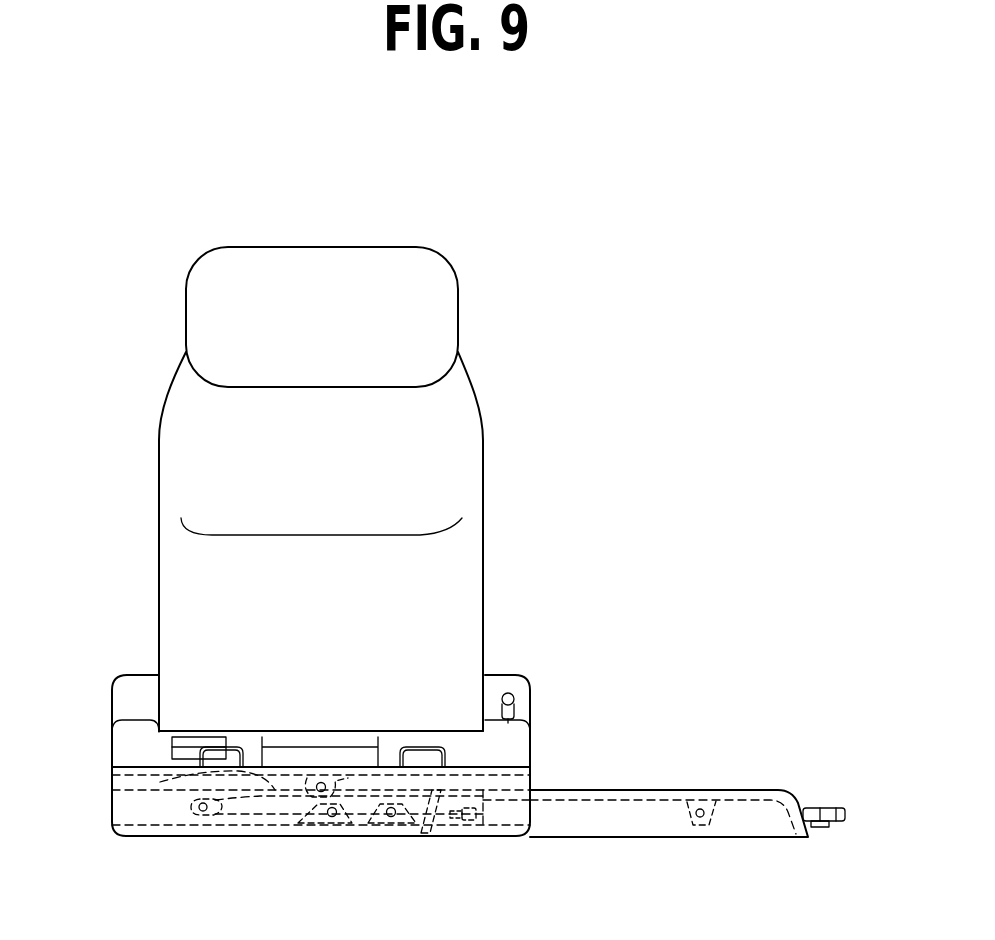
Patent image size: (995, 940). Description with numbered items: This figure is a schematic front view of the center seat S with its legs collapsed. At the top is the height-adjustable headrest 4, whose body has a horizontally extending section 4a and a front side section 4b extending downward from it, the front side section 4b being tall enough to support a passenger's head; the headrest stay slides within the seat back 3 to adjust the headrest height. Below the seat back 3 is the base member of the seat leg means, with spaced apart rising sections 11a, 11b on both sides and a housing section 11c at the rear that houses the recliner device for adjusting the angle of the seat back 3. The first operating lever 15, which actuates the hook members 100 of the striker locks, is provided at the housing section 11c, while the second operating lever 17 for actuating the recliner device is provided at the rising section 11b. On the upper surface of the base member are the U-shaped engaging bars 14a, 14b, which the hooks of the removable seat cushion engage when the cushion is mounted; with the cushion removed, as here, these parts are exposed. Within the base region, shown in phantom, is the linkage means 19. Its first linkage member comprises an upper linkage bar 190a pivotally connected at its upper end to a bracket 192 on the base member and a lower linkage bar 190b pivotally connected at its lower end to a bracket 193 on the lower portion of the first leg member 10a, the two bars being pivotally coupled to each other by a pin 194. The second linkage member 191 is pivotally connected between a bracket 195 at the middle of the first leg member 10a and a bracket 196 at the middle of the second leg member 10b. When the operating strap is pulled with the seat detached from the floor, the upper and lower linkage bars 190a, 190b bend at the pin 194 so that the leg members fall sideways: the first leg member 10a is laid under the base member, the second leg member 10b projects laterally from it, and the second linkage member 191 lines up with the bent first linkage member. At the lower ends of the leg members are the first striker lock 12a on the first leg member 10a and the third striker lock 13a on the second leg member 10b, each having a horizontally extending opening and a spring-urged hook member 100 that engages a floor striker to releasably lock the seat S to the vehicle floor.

The center seat S is at (508, 278).
The headrest 4 is at (226, 240).
The horizontally extending section 4a is at (322, 247).
The front side section 4b is at (393, 323).
The seat back 3 is at (456, 500).
The rising section 11a is at (145, 717).
The rising section 11b is at (520, 720).
The housing section 11c is at (330, 740).
The second operating lever 17 is at (510, 696).
The first operating lever 15 is at (190, 742).
The engaging bar 14a is at (228, 748).
The engaging bar 14b is at (422, 747).
The linkage means 19 is at (182, 830).
The upper linkage bar 190a is at (165, 778).
The lower linkage bar 190b is at (238, 810).
The pin 194 is at (200, 799).
The bracket 192 is at (352, 780).
The bracket 195 is at (300, 830).
The bracket 193 is at (370, 830).
The first leg member 10a is at (430, 837).
The first striker lock 12a is at (471, 822).
The second leg member 10b is at (713, 790).
The second linkage member 191 is at (607, 813).
The bracket 196 is at (718, 804).
The third striker lock 13a is at (835, 807).
The hook member 100 is at (826, 823).